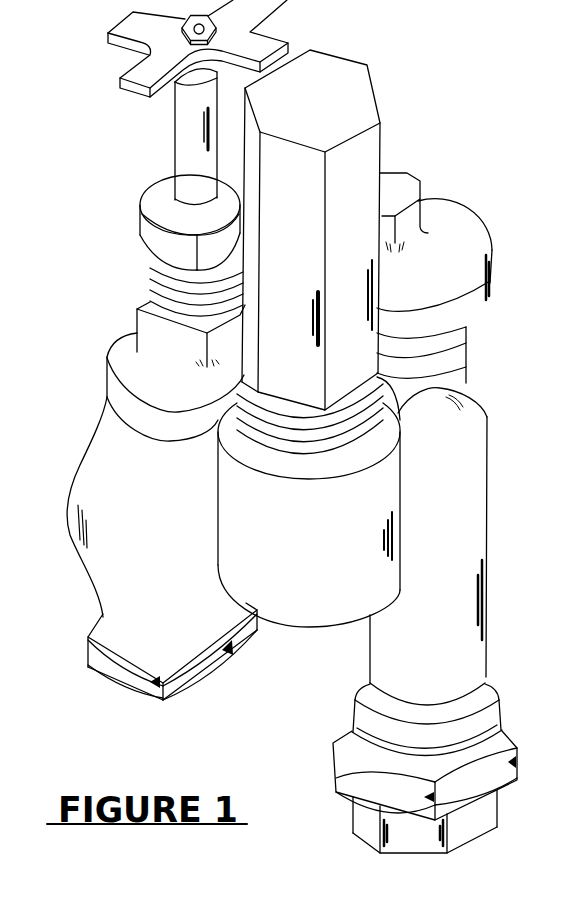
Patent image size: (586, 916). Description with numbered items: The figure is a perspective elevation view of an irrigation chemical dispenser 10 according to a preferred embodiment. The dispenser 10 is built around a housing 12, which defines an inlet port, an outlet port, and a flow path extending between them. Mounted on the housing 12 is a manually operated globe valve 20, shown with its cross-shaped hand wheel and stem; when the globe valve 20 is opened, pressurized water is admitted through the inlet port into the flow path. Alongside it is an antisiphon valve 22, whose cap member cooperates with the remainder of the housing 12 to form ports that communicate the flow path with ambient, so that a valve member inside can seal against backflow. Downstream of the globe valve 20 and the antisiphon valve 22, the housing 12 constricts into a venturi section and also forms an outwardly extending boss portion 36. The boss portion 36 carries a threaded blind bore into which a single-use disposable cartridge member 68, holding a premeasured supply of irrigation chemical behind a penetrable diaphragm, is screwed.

The irrigation chemical dispenser 10 is at (97, 159).
The manually operated globe valve 20 is at (92, 294).
The housing 12 is at (108, 464).
The single-use disposable cartridge member 68 is at (382, 150).
The boss portion 36 is at (310, 613).
The antisiphon valve 22 is at (467, 232).